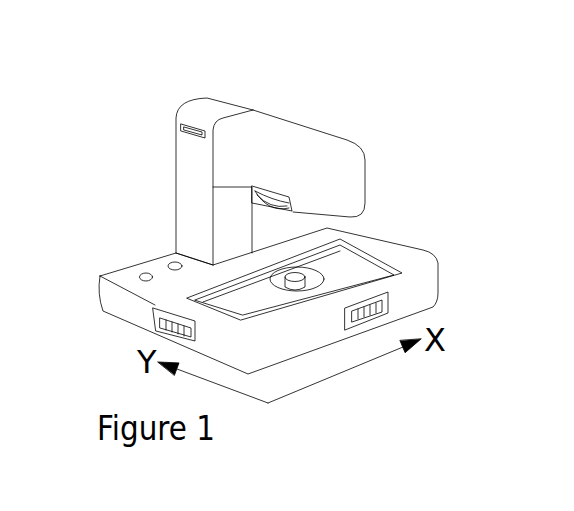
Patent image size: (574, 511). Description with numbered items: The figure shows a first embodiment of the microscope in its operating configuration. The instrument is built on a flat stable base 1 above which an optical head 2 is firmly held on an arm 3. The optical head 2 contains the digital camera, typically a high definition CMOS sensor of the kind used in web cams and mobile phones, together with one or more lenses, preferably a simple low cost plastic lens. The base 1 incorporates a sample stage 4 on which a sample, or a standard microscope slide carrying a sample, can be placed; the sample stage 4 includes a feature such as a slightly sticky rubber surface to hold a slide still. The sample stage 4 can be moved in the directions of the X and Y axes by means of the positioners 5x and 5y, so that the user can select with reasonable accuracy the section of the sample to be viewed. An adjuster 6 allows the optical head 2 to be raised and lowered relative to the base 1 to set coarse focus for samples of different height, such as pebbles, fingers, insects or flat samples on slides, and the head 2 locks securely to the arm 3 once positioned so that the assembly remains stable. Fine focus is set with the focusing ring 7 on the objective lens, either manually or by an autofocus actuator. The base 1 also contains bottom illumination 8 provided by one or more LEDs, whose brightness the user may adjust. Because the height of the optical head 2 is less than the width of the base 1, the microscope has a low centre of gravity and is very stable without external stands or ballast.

The base 1 is at (458, 251).
The optical head 2 is at (361, 125).
The arm 3 is at (150, 172).
The sample stage 4 is at (393, 249).
The positioner 5x is at (416, 297).
The positioner 5y is at (140, 294).
The adjuster 6 is at (159, 105).
The focusing ring 7 is at (284, 171).
The bottom illumination 8 is at (331, 257).